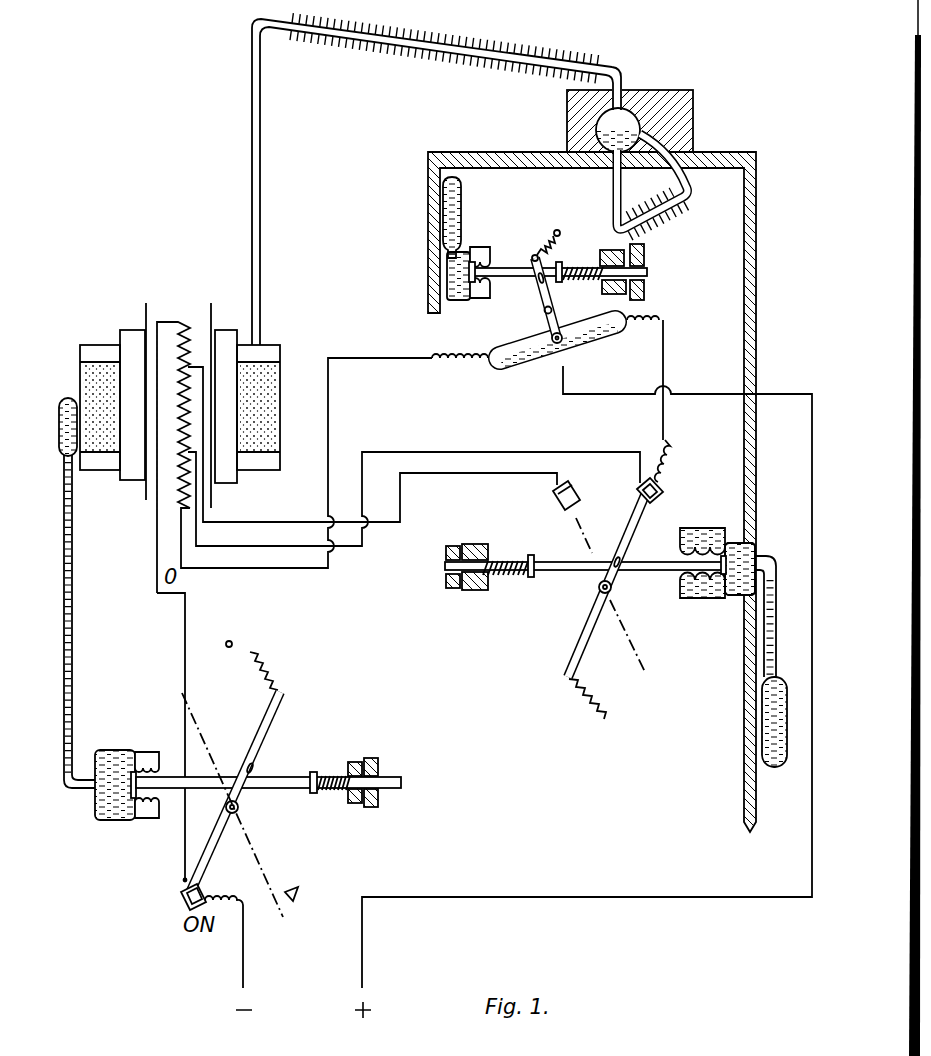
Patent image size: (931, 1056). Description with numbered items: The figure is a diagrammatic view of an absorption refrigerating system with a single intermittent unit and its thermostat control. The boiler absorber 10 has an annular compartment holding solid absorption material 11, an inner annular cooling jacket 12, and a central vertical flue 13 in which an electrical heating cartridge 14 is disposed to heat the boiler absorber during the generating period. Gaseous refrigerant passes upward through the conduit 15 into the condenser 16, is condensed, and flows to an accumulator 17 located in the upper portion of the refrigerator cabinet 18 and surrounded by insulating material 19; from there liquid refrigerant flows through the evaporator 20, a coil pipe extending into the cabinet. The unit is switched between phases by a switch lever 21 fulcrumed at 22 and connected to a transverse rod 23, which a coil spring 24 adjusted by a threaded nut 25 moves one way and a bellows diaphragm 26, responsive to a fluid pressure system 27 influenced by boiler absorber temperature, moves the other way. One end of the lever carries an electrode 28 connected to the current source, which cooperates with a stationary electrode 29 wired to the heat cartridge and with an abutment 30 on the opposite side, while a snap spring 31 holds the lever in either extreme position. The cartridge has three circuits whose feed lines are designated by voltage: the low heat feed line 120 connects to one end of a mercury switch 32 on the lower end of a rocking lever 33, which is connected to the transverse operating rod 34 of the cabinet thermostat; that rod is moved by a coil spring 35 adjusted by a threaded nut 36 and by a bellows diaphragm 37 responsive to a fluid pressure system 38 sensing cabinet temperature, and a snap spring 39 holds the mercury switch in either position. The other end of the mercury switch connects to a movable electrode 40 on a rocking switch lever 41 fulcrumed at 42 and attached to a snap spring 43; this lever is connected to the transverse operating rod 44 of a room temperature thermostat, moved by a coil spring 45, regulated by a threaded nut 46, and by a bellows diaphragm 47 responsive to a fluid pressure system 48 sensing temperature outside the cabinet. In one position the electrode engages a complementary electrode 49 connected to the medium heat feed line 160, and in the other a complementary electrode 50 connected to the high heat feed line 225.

The boiler absorber 10 is at (95, 339).
The solid absorption material 11 is at (272, 354).
The inner annular cooling jacket 12 is at (225, 330).
The central vertical flue 13 is at (211, 304).
The electrical heating cartridge 14 is at (173, 457).
The conduit 15 is at (250, 178).
The condenser 16 is at (428, 69).
The accumulator 17 is at (618, 120).
The refrigerator cabinet 18 is at (505, 153).
The insulating material 19 is at (660, 93).
The evaporator 20 is at (625, 210).
The switch lever 21 is at (265, 741).
The fulcrum 22 is at (240, 807).
The transverse rod 23 is at (262, 786).
The coil spring 24 is at (326, 772).
The threaded nut 25 is at (378, 764).
The bellows diaphragm 26 is at (122, 750).
The fluid pressure system 27 is at (72, 392).
The electrode 28 is at (181, 895).
The stationary electrode 29 is at (184, 907).
The abutment 30 is at (294, 891).
The snap spring 31 is at (257, 668).
The mercury switch 32 is at (528, 370).
The rocking lever 33 is at (558, 321).
The transverse operating rod 34 is at (505, 268).
The coil spring 35 is at (583, 262).
The threaded nut 36 is at (645, 258).
The bellows diaphragm 37 is at (478, 252).
The fluid pressure system 38 is at (462, 193).
The snap spring 39 is at (555, 231).
The movable electrode 40 is at (664, 495).
The rocking switch lever 41 is at (632, 541).
The fulcrum 42 is at (613, 592).
The snap spring 43 is at (597, 703).
The transverse operating rod 44 is at (565, 561).
The coil spring 45 is at (507, 561).
The threaded nut 46 is at (456, 546).
The bellows diaphragm 47 is at (704, 528).
The fluid pressure system 48 is at (775, 768).
The complementary electrode 49 is at (640, 495).
The complementary electrode 50 is at (573, 489).
The feed line 120 is at (306, 464).
The feed line 160 is at (414, 487).
The feed line 225 is at (372, 445).